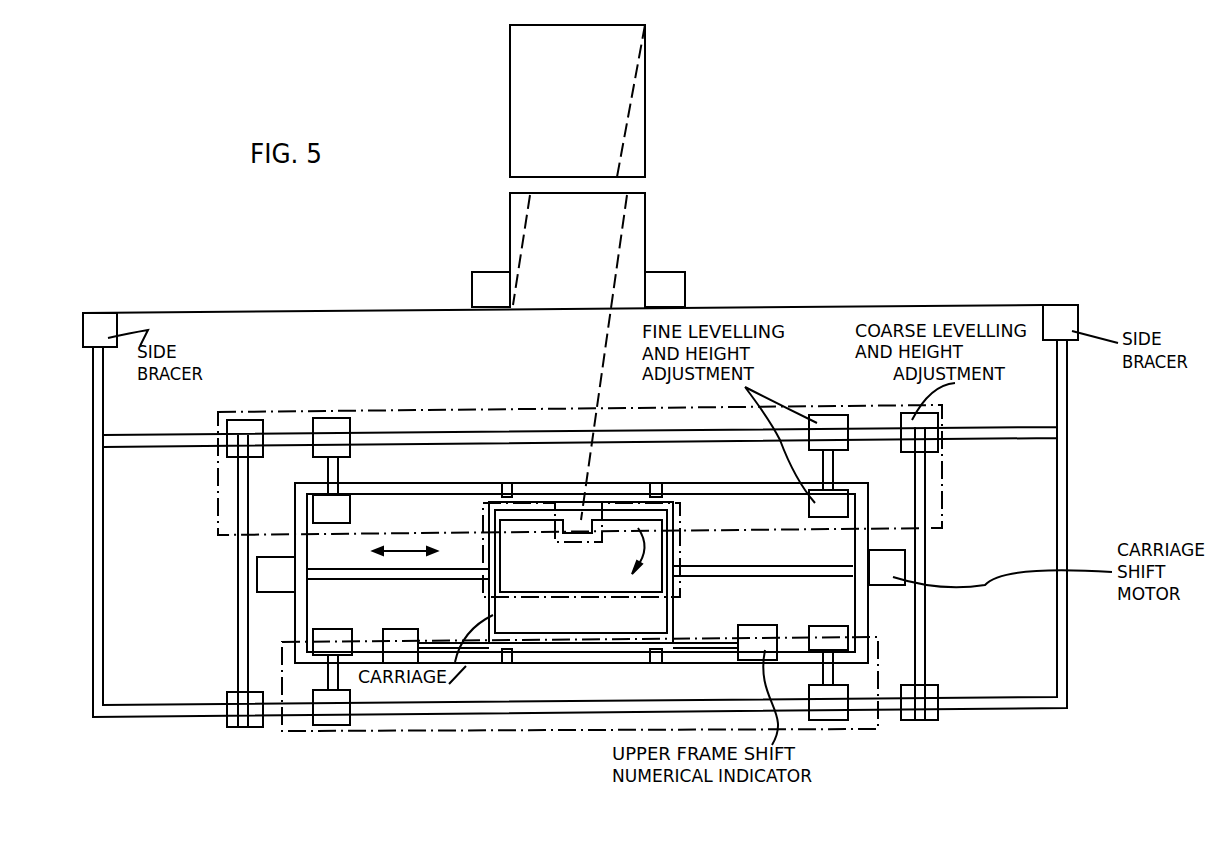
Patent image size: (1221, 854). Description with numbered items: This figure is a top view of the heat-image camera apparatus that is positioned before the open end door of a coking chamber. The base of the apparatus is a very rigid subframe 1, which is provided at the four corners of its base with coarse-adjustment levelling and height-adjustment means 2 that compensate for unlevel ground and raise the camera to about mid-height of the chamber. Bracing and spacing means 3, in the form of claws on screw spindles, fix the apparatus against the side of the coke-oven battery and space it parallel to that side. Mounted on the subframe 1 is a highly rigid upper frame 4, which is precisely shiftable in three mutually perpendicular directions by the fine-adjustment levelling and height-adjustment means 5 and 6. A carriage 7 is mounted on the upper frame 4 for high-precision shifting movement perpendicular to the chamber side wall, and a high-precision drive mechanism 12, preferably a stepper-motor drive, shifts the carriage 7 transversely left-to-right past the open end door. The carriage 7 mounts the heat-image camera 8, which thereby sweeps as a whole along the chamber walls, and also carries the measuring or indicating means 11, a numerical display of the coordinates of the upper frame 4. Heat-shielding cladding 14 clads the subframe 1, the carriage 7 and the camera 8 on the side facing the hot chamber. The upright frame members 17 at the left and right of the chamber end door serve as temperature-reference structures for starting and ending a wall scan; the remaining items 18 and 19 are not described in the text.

The subframe 1 is at (918, 463).
The coarse-adjustment levelling and height-adjustment means 2 is at (930, 420).
The bracing and spacing means 3 is at (1078, 306).
The upper frame 4 is at (858, 655).
The fine-adjustment levelling and height-adjustment means 5 is at (840, 430).
The fine-adjustment levelling and height-adjustment means 6 is at (840, 505).
The carriage 7 is at (535, 633).
The heat-image camera 8 is at (597, 560).
The measuring or indicating means 11 is at (750, 645).
The drive mechanism 12 is at (900, 563).
The heat-shielding cladding 14 is at (942, 515).
The upright frame members 17 is at (670, 290).
The pillar 18 is at (563, 128).
The horizontal beam 19 is at (780, 305).